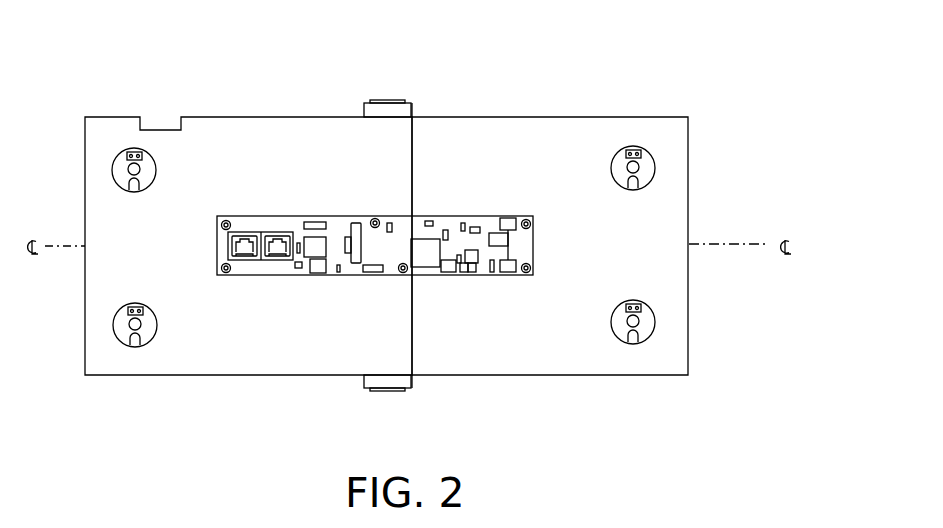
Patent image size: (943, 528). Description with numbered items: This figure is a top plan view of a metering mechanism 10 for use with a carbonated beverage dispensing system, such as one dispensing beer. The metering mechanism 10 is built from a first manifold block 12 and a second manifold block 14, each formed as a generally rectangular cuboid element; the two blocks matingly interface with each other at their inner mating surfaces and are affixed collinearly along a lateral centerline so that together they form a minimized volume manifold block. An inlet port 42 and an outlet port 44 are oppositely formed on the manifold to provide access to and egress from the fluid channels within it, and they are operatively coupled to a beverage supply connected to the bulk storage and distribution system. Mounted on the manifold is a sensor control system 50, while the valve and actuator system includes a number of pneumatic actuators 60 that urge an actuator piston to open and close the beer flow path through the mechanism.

The metering mechanism 10 is at (425, 232).
The first manifold block 12 is at (132, 375).
The second manifold block 14 is at (630, 362).
The inlet port 42 is at (390, 100).
The outlet port 44 is at (394, 391).
The sensor control system 50 is at (365, 215).
The pneumatic actuators 60 is at (640, 151).